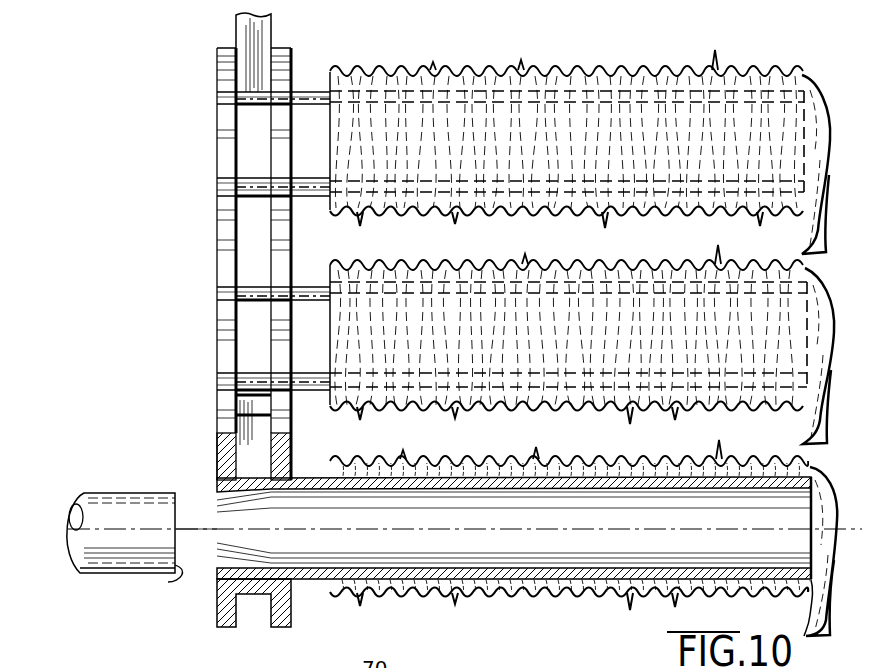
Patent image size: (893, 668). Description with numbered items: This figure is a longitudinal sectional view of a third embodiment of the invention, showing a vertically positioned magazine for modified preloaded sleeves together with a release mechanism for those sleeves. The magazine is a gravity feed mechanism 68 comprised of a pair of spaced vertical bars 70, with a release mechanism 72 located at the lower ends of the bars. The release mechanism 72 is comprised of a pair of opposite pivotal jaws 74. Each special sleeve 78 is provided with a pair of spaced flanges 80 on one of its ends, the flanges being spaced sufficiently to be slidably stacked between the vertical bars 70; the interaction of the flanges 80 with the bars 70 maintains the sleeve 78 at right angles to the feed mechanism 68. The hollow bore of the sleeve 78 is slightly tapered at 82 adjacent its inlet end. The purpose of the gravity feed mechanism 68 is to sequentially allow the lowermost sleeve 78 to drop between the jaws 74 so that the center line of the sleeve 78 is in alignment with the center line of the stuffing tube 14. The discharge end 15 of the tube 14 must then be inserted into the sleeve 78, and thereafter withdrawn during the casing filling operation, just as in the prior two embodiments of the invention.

The stuffing tube 14 is at (69, 600).
The discharge end 15 is at (183, 565).
The gravity feed mechanism 68 is at (232, 75).
The vertical bars 70 is at (243, 28).
The release mechanism 72 is at (243, 435).
The pivotal jaws 74 is at (257, 460).
The sleeve 78 is at (826, 256).
The flanges 80 is at (225, 265).
The tapered portion 82 is at (240, 547).